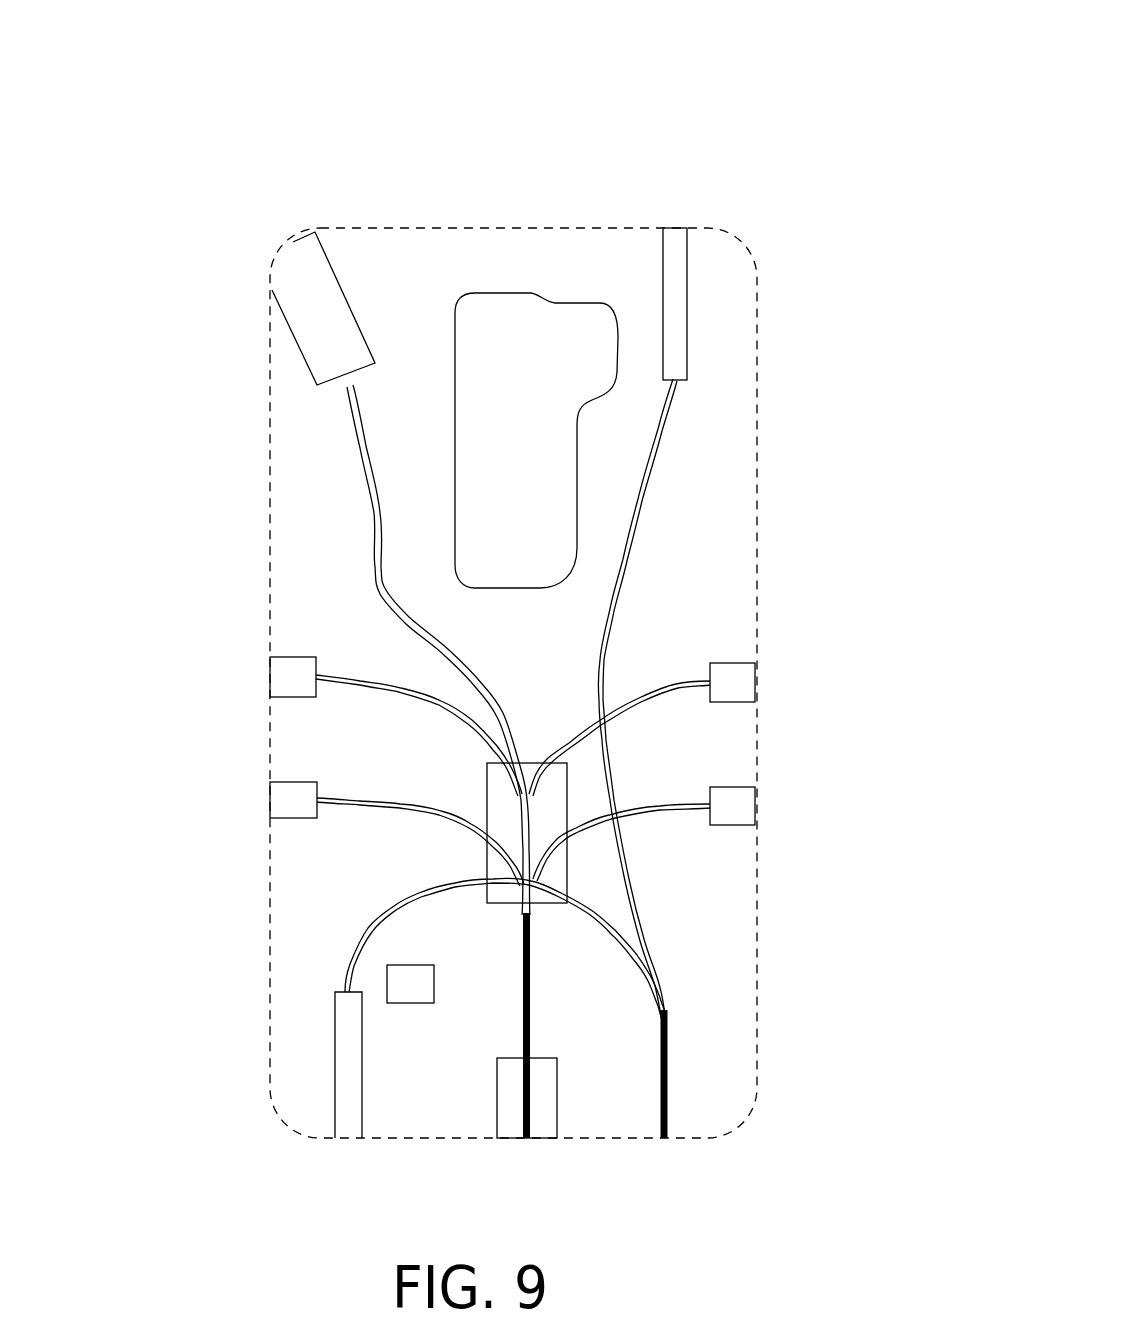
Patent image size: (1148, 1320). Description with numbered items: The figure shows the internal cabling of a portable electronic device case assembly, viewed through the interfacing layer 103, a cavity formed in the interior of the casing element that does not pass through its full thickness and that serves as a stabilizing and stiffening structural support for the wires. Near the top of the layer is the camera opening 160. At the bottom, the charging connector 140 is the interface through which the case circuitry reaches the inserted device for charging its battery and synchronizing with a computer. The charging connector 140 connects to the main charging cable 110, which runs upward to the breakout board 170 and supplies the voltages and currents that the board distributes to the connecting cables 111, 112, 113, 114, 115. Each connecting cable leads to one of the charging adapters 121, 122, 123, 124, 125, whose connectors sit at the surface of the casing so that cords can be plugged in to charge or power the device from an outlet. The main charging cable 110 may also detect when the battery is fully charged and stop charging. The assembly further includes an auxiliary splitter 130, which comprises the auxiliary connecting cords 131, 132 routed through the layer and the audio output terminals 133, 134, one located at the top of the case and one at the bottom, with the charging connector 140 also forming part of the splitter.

The interfacing layer 103 is at (318, 153).
The main charging cable 110 is at (538, 1007).
The connecting cable 111 is at (338, 662).
The connecting cable 112 is at (676, 683).
The connecting cable 113 is at (340, 820).
The connecting cable 114 is at (348, 440).
The connecting cable 115 is at (674, 825).
The charging adapter 121 is at (262, 668).
The charging adapter 122 is at (762, 678).
The charging adapter 123 is at (262, 795).
The charging adapter 124 is at (305, 298).
The charging adapter 125 is at (762, 803).
The auxiliary splitter 130 is at (663, 978).
The auxiliary connecting cord 131 is at (678, 458).
The auxiliary connecting cord 132 is at (332, 965).
The audio output terminal 133 is at (653, 308).
The audio output terminal 134 is at (322, 1058).
The charging connector 140 is at (545, 1110).
The camera opening 160 is at (512, 320).
The breakout board 170 is at (578, 886).